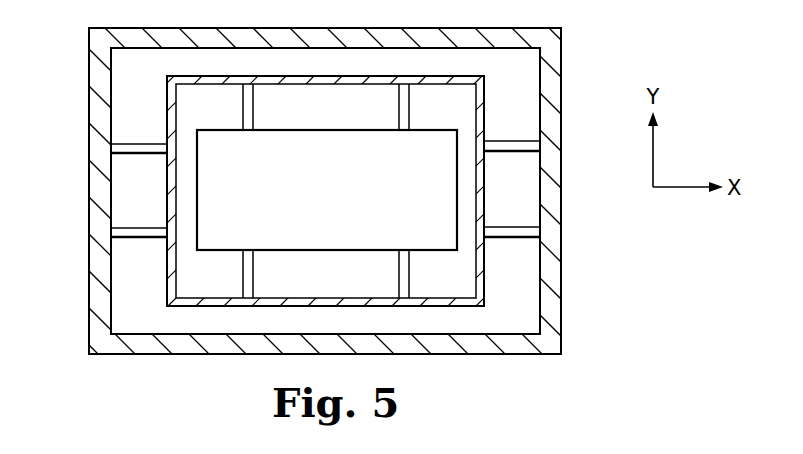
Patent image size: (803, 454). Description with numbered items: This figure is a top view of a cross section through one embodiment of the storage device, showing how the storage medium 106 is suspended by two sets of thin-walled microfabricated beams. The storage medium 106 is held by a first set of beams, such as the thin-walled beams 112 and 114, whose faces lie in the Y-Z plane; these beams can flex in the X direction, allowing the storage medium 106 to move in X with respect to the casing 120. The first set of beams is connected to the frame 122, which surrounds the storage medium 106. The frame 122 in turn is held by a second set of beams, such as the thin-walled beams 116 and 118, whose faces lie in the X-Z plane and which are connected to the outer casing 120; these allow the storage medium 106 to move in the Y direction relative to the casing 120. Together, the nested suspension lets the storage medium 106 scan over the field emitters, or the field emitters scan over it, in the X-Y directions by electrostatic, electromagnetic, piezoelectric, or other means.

The storage medium 106 is at (306, 198).
The thin-walled beam 112 is at (247, 107).
The thin-walled beam 114 is at (405, 112).
The thin-walled beam 116 is at (510, 230).
The thin-walled beam 118 is at (508, 142).
The casing 120 is at (550, 307).
The frame 122 is at (476, 107).